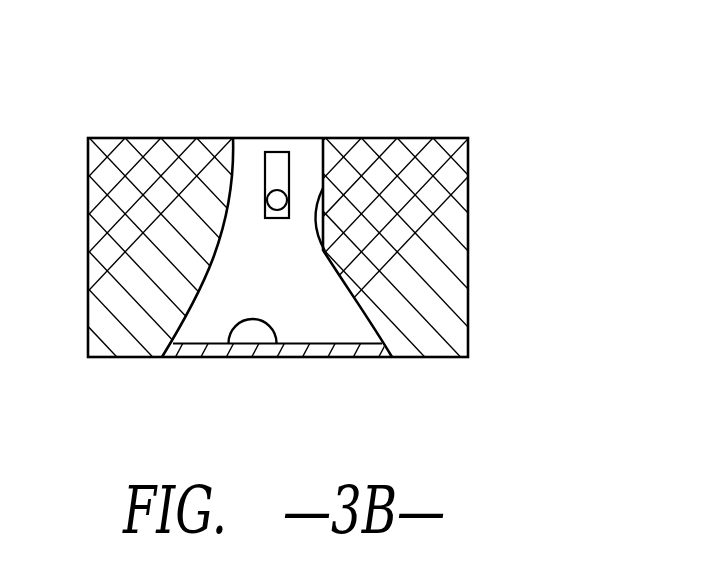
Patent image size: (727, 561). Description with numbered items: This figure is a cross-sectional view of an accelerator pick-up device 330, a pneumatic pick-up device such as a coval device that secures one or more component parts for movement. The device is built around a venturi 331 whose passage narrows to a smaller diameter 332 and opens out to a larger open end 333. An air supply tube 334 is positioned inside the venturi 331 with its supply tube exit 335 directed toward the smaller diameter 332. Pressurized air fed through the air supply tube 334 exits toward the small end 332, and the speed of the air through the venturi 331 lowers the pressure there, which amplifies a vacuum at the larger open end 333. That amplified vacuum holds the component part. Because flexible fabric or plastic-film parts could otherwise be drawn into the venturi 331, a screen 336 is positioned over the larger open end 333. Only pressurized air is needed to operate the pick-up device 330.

The accelerator pick-up device 330 is at (523, 150).
The venturi 331 is at (324, 187).
The smaller diameter of the venturi 332 is at (246, 138).
The larger open end of the venturi 333 is at (229, 344).
The air supply tube 334 is at (290, 156).
The supply tube exit 335 is at (277, 152).
The screen 336 is at (343, 358).